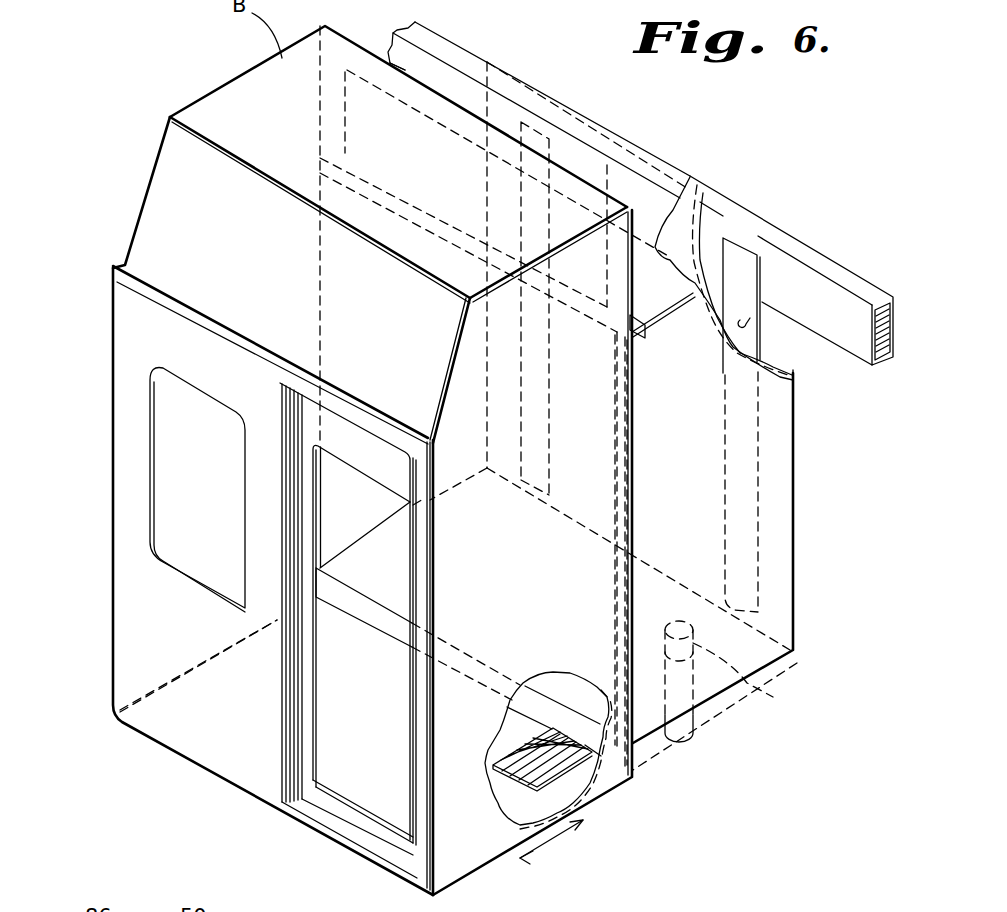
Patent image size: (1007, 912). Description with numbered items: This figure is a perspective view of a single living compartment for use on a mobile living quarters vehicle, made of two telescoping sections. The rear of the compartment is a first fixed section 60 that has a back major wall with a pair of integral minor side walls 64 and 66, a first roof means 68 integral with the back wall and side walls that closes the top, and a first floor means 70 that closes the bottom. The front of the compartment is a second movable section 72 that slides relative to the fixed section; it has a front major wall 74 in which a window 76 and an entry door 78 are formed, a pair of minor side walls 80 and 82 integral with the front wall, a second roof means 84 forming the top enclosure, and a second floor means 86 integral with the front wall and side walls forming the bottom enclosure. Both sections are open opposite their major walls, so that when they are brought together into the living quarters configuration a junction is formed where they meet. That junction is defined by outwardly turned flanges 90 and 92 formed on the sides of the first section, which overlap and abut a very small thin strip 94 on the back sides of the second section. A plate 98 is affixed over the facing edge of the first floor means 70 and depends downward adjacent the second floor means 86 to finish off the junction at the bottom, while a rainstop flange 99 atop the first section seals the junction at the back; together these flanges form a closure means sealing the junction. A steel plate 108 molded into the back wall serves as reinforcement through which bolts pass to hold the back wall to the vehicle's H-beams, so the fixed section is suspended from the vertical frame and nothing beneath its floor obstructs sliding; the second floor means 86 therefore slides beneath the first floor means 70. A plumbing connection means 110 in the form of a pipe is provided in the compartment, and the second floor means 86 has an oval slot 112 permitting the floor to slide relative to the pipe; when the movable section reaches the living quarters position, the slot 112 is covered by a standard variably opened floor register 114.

The first fixed section 60 is at (712, 198).
The minor side wall 64 is at (352, 530).
The minor side wall 66 is at (782, 458).
The first roof means 68 is at (648, 170).
The first floor means 70 is at (753, 650).
The second movable section 72 is at (135, 200).
The front major wall 74 is at (133, 598).
The window 76 is at (180, 510).
The entry door 78 is at (327, 798).
The minor side wall 80 is at (475, 857).
The minor side wall 82 is at (158, 665).
The second roof means 84 is at (205, 115).
The second floor means 86 is at (388, 773).
The flange 90 is at (618, 502).
The flange 92 is at (318, 513).
The thin strip 94 is at (625, 538).
The plate 98 is at (378, 612).
The rainstop flange 99 is at (662, 305).
The steel plate 108 is at (757, 270).
The plumbing connection means 110 is at (773, 697).
The oval slot 112 is at (542, 750).
The floor register 114 is at (590, 783).